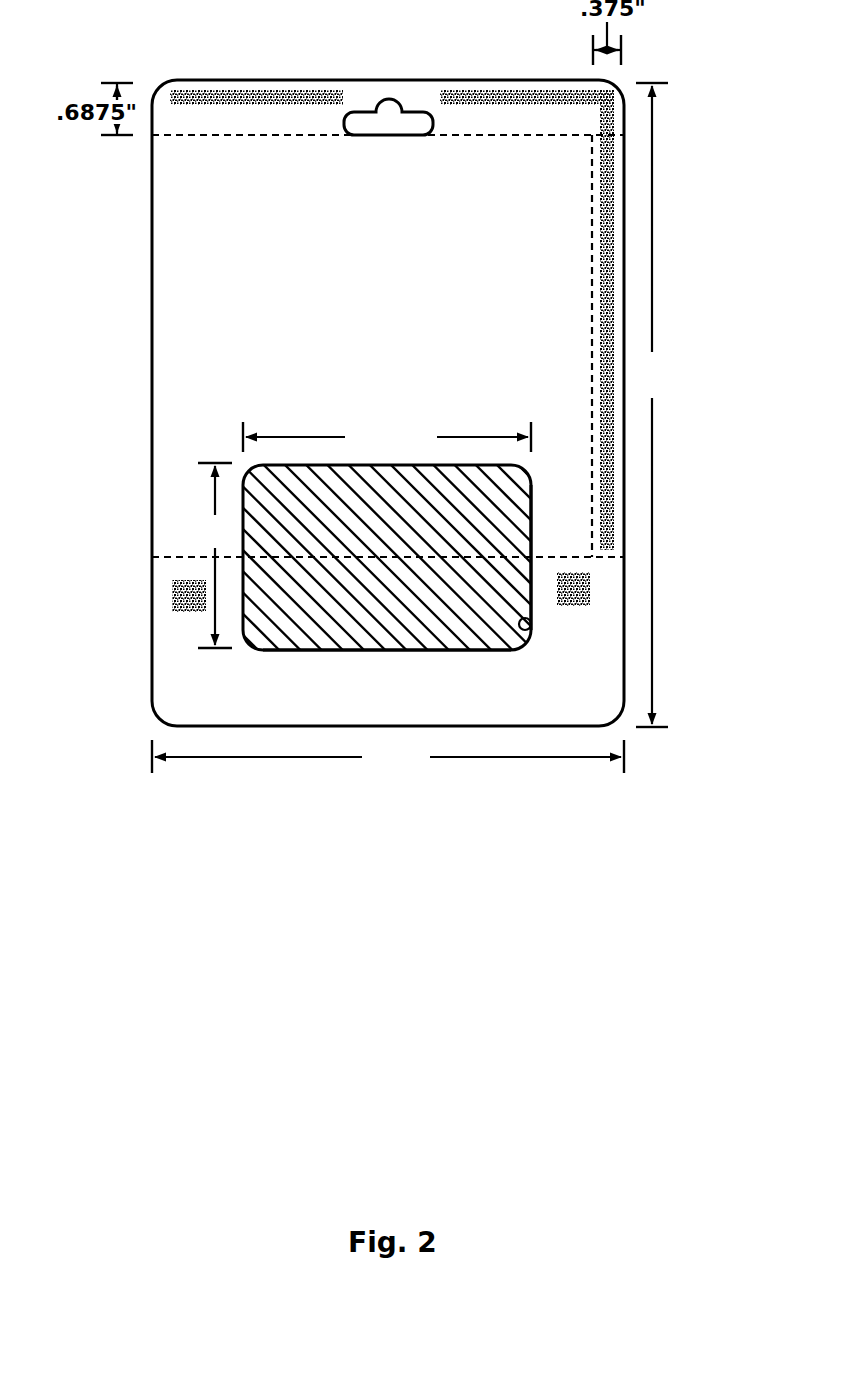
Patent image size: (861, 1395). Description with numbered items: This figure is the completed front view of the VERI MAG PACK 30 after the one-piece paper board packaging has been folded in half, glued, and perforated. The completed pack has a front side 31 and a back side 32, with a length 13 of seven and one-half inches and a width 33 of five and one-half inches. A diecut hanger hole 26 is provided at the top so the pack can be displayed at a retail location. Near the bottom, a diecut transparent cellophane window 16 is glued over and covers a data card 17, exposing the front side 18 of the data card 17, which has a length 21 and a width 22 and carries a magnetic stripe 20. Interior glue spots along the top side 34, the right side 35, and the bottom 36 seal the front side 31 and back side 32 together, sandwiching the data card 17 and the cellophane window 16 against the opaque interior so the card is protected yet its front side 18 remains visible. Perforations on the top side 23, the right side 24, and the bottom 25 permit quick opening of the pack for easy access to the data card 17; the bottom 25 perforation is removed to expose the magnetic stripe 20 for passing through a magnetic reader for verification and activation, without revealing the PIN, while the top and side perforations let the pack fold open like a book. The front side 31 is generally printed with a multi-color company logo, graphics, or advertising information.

The length 13 is at (652, 212).
The diecut transparent cellophane window 16 is at (387, 557).
The data card 17 is at (391, 652).
The front side of data card 18 is at (516, 494).
The magnetic stripe 20 is at (531, 628).
The length of data card 21 is at (303, 437).
The width of data card 22 is at (215, 495).
The top side perforation 23 is at (258, 135).
The right side perforation 24 is at (592, 248).
The bottom perforation 25 is at (152, 557).
The diecut hanger hole 26 is at (389, 108).
The VERI MAG PACK 30 is at (322, 78).
The front side 31 is at (390, 290).
The back side 32 is at (152, 280).
The width 33 is at (272, 757).
The top side glue spots 34 is at (206, 96).
The right side glue spots 35 is at (604, 180).
The bottom glue spots 36 is at (172, 595).